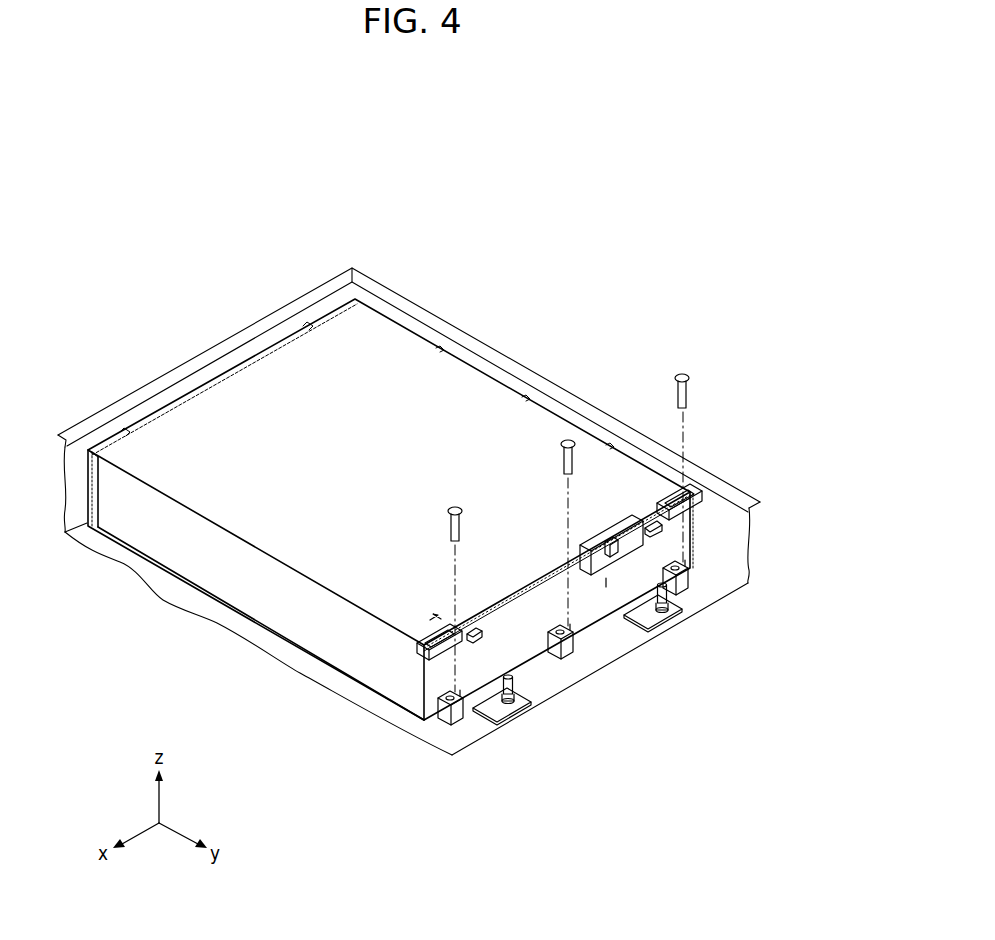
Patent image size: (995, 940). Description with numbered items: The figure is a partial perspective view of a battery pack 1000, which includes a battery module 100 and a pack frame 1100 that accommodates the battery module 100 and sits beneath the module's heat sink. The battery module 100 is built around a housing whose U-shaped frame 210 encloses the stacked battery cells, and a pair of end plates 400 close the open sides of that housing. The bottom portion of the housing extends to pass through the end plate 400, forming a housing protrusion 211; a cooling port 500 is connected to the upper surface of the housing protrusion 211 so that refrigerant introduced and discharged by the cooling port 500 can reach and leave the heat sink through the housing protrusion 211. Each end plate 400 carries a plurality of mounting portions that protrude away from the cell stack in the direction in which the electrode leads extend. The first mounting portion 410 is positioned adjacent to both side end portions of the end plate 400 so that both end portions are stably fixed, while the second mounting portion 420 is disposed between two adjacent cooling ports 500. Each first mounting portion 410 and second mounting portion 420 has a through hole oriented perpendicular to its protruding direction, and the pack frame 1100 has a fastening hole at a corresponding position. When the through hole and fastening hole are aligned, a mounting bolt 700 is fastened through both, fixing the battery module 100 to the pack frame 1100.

The battery pack 1000 is at (412, 206).
The pack frame 1100 is at (290, 308).
The battery module 100 is at (485, 405).
The U-shaped frame 210 is at (247, 597).
The housing protrusion 211 is at (523, 697).
The end plate 400 is at (596, 679).
The first mounting portion 410 is at (442, 724).
The second mounting portion 420 is at (575, 652).
The cooling port 500 is at (502, 714).
The mounting bolt 700 is at (682, 372).